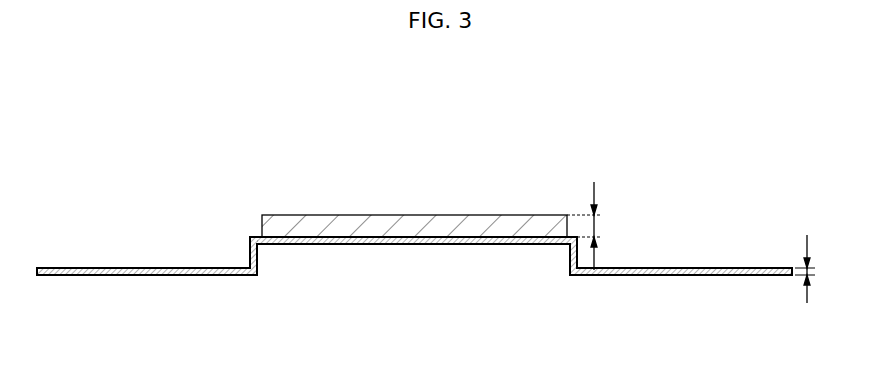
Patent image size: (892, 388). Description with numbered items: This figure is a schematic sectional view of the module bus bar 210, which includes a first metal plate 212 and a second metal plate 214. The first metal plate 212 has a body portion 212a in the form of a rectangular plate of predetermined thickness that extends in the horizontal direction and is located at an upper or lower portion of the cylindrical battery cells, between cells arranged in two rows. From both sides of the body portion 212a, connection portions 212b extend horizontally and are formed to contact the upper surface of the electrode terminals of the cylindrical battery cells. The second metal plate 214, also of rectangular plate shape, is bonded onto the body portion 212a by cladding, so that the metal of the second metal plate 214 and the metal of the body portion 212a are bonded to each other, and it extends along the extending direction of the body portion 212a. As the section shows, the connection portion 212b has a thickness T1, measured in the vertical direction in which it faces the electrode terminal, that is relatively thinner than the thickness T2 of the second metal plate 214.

The module bus bar 210 is at (202, 135).
The first metal plate 212 is at (377, 318).
The body portion 212a is at (345, 246).
The connection portion 212b is at (172, 277).
The second metal plate 214 is at (343, 215).
The thickness of the connection portion T1 is at (815, 269).
The thickness of the second metal plate T2 is at (594, 226).